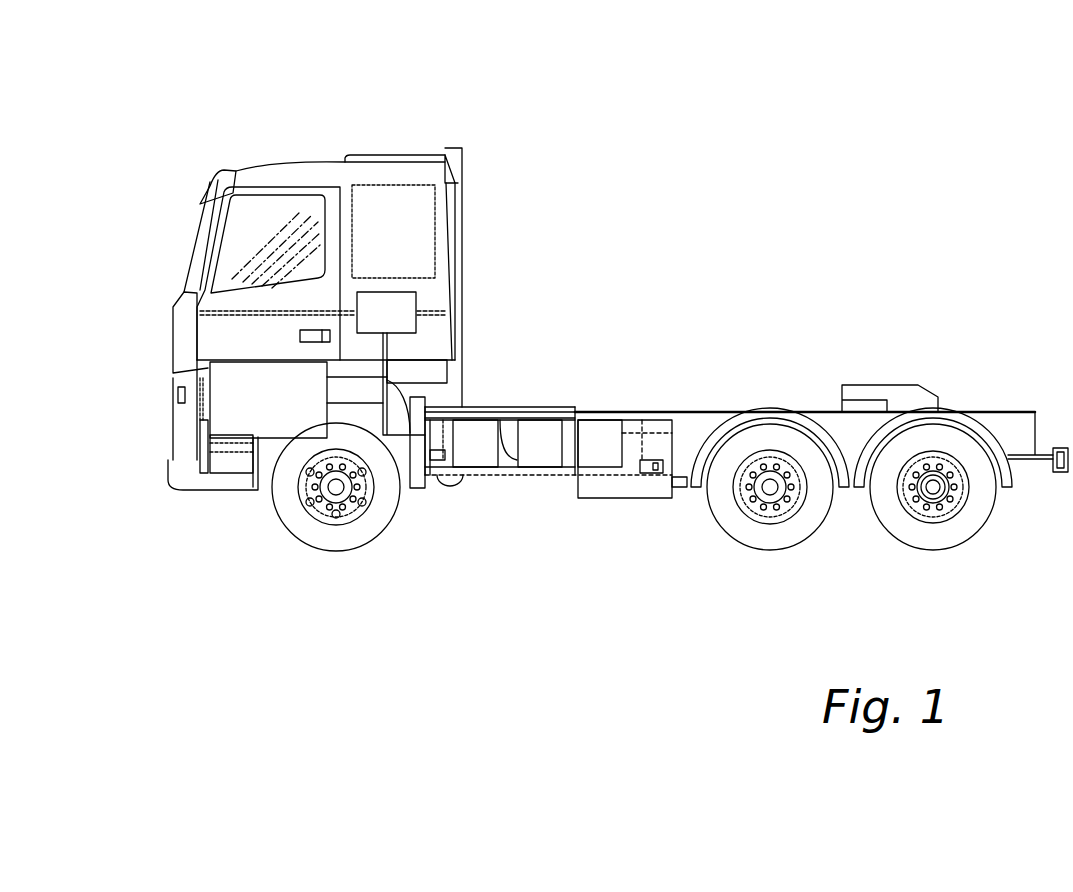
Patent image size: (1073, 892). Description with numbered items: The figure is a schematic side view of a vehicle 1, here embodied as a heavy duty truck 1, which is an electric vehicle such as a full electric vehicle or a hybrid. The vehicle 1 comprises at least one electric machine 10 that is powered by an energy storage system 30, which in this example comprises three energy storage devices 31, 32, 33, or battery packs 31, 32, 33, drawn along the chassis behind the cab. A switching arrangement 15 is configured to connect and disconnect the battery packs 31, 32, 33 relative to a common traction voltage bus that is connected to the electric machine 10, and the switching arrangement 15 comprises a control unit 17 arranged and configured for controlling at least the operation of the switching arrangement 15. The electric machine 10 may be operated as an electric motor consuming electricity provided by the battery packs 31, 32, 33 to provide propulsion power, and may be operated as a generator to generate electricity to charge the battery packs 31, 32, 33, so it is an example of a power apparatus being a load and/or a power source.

The vehicle 1 is at (284, 88).
The electric machine 10 is at (228, 438).
The switching arrangement 15 is at (500, 350).
The control unit 17 is at (417, 297).
The energy storage system 30 is at (560, 373).
The energy storage device 31 is at (478, 467).
The energy storage device 32 is at (533, 467).
The energy storage device 33 is at (592, 467).